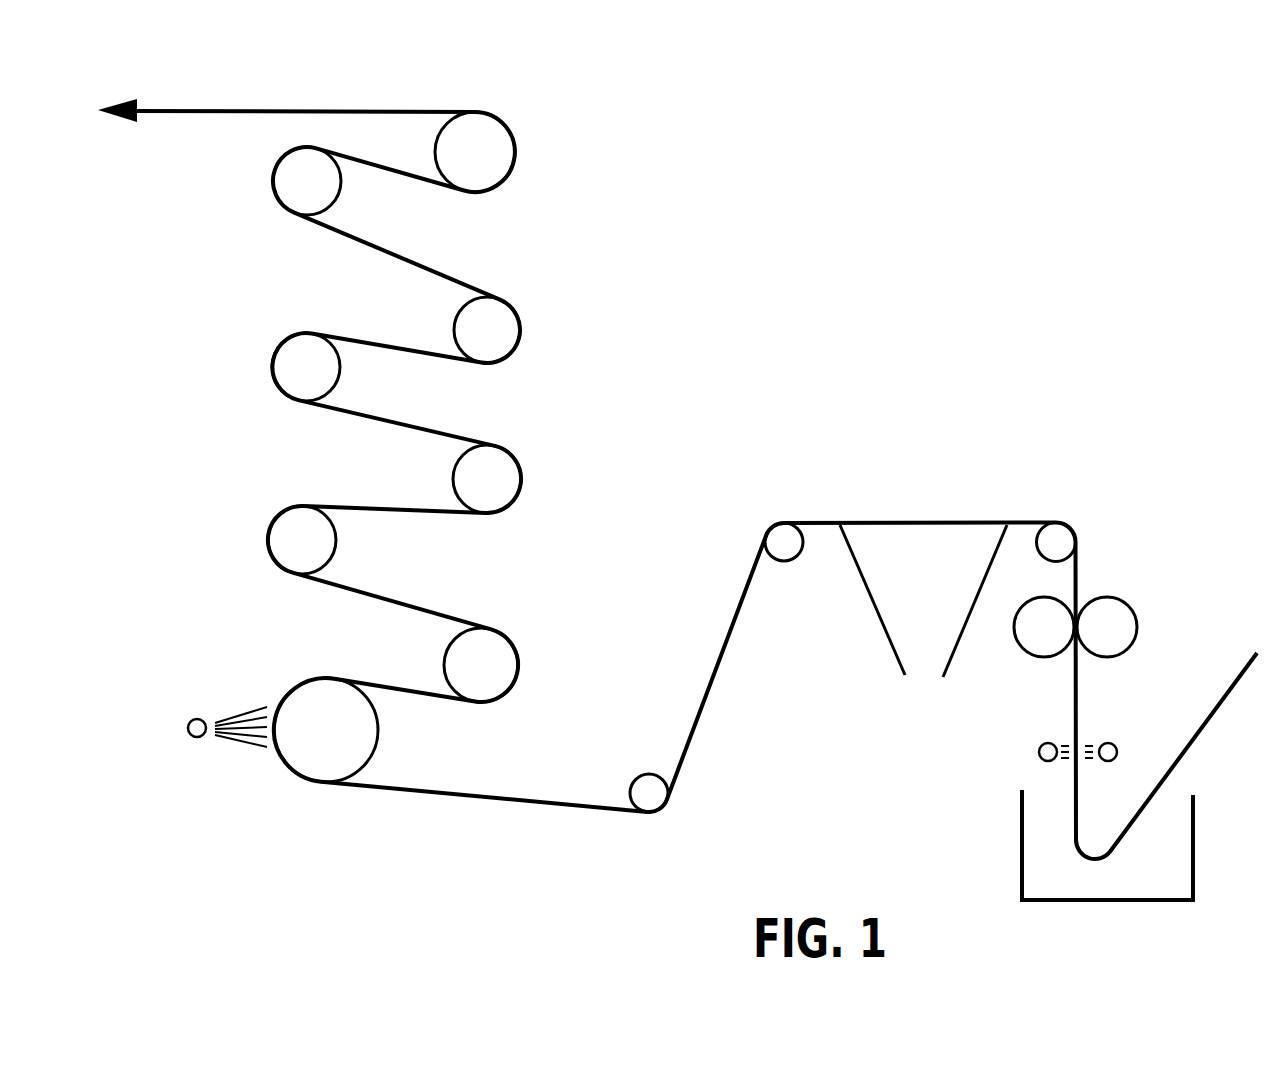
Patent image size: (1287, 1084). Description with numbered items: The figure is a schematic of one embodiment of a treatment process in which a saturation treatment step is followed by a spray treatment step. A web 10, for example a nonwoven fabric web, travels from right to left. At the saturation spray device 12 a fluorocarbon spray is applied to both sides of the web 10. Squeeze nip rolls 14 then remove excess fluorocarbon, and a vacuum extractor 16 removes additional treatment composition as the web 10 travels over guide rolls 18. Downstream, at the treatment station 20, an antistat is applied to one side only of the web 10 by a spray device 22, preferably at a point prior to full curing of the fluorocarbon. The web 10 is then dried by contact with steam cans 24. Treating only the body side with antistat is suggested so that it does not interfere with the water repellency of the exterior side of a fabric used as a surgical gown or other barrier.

The web 10 is at (218, 107).
The saturation spray device 12 is at (1016, 781).
The squeeze nip rolls 14 is at (1032, 633).
The vacuum extractor 16 is at (926, 680).
The guide rolls 18 is at (651, 794).
The treatment station 20 is at (209, 734).
The spray device 22 is at (192, 717).
The steam cans 24 is at (498, 161).